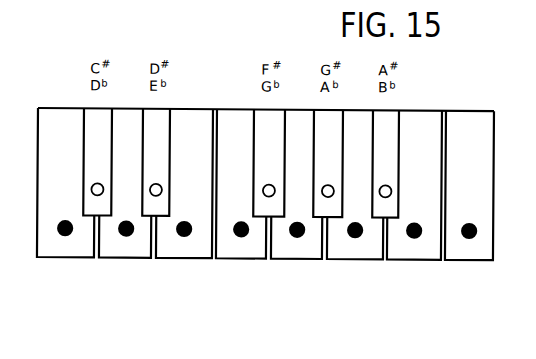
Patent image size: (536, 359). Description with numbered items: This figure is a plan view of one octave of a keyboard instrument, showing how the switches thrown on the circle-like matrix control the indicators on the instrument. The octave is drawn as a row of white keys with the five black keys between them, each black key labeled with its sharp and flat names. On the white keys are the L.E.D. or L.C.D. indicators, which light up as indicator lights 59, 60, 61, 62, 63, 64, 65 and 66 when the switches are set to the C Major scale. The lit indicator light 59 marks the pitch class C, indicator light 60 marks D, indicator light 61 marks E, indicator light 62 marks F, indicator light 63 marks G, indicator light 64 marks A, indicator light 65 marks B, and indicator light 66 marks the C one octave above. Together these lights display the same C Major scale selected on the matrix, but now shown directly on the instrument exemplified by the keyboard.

The keyboard indicator light 59 is at (66, 235).
The keyboard indicator light 60 is at (127, 235).
The keyboard indicator light 61 is at (185, 235).
The keyboard indicator light 62 is at (242, 235).
The keyboard indicator light 63 is at (298, 235).
The keyboard indicator light 64 is at (356, 235).
The keyboard indicator light 65 is at (415, 235).
The keyboard indicator light 66 is at (470, 235).